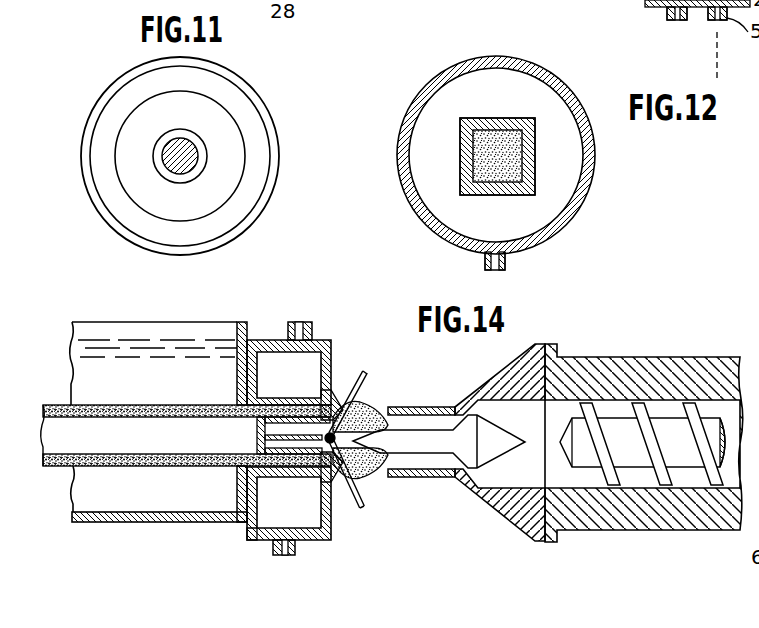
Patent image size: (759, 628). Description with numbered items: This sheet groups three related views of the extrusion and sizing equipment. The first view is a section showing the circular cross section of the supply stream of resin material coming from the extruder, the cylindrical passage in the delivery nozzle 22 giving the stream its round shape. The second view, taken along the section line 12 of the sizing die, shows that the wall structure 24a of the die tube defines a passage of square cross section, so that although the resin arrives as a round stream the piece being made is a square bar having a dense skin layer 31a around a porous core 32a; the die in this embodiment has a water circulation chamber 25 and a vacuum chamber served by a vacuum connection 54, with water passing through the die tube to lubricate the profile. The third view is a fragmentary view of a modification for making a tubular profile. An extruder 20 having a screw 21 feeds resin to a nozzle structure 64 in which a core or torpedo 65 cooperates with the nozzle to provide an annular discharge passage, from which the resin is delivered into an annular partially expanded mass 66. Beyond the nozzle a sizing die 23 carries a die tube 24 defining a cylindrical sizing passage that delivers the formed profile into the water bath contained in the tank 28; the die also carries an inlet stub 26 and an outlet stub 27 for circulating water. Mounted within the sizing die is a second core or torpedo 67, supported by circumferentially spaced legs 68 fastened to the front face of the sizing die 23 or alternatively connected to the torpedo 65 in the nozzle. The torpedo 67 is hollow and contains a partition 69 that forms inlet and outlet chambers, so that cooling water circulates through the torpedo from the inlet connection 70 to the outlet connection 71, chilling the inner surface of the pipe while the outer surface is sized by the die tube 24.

In FIG. 12, the section line 12 is at (742, 47).
In FIG. 14, the extruder 20 is at (620, 362).
In FIG. 14, the screw 21 is at (665, 420).
In FIG. 11, the delivery nozzle 22 is at (243, 170).
In FIG. 12, the sizing die 23 is at (596, 159).
In FIG. 14, the sizing die 23 is at (319, 340).
In FIG. 14, the die tube 24 is at (270, 400).
In FIG. 12, the wall structure 24a is at (495, 118).
In FIG. 12, the water circulation chamber 25 is at (642, 1).
In FIG. 14, the inlet stub 26 is at (305, 323).
In FIG. 12, the outlet stub 27 is at (667, 17).
In FIG. 14, the outlet stub 27 is at (297, 547).
In FIG. 14, the tank 28 is at (102, 523).
In FIG. 12, the dense skin layer 31a is at (468, 148).
In FIG. 12, the porous core 32a is at (460, 128).
In FIG. 12, the vacuum connection 54 is at (505, 263).
In FIG. 14, the nozzle structure 64 is at (512, 508).
In FIG. 14, the torpedo 65 is at (417, 444).
In FIG. 14, the annular partially expanded mass 66 is at (371, 398).
In FIG. 14, the torpedo 67 is at (252, 436).
In FIG. 14, the legs 68 is at (342, 500).
In FIG. 14, the partition 69 is at (249, 530).
In FIG. 14, the inlet connection 70 is at (355, 370).
In FIG. 14, the outlet connection 71 is at (366, 514).